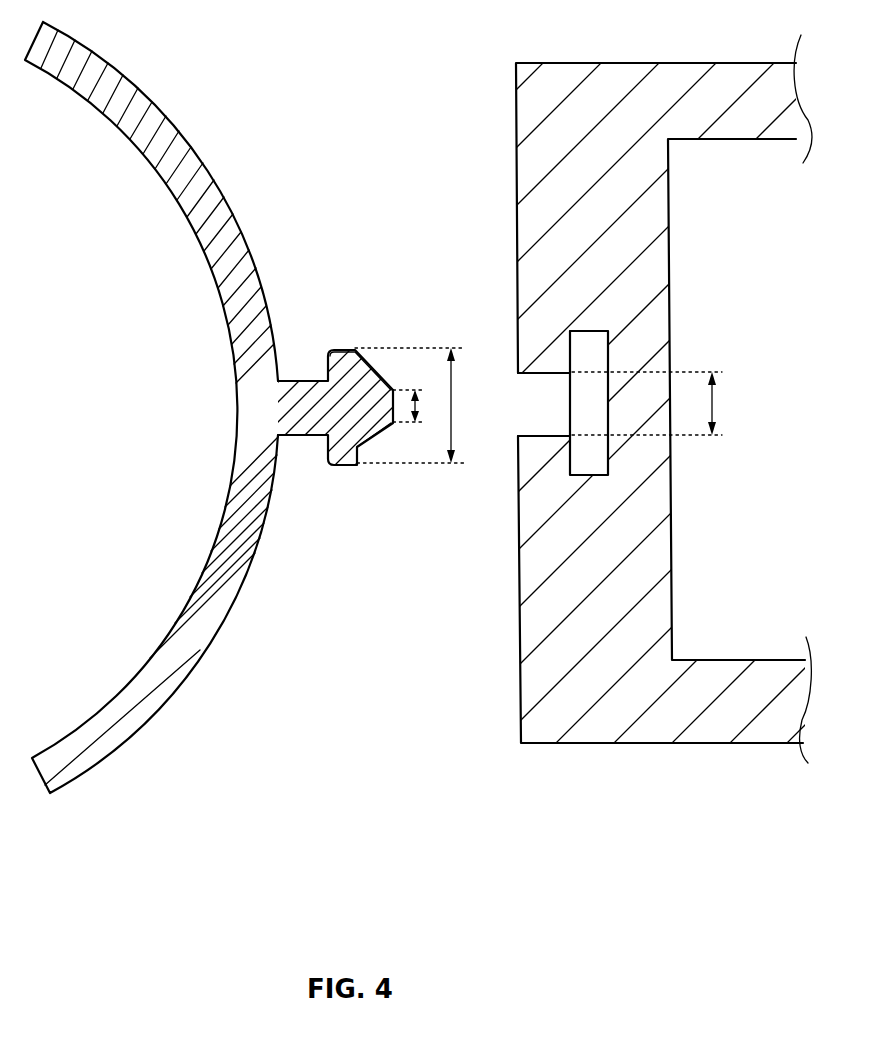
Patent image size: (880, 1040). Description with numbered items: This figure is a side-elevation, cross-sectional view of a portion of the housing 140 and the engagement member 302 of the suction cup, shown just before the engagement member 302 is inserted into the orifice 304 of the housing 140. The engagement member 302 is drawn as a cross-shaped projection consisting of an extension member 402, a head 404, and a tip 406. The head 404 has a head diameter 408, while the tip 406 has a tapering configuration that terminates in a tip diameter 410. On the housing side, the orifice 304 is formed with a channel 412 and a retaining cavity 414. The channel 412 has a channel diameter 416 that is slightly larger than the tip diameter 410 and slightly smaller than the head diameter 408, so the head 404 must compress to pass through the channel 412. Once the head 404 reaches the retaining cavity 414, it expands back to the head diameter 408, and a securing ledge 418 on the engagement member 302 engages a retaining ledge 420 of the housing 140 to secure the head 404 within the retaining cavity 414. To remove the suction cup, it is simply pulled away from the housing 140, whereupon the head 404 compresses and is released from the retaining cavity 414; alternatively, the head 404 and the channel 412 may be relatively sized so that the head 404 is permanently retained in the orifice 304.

The housing 140 is at (700, 745).
The engagement member 302 is at (430, 430).
The orifice 304 is at (558, 433).
The extension member 402 is at (297, 423).
The head 404 is at (336, 356).
The tip 406 is at (363, 427).
The head diameter 408 is at (452, 400).
The tip diameter 410 is at (420, 408).
The channel 412 is at (547, 423).
The retaining cavity 414 is at (592, 356).
The channel diameter 416 is at (715, 403).
The securing ledge 418 is at (327, 368).
The retaining ledge 420 is at (568, 357).